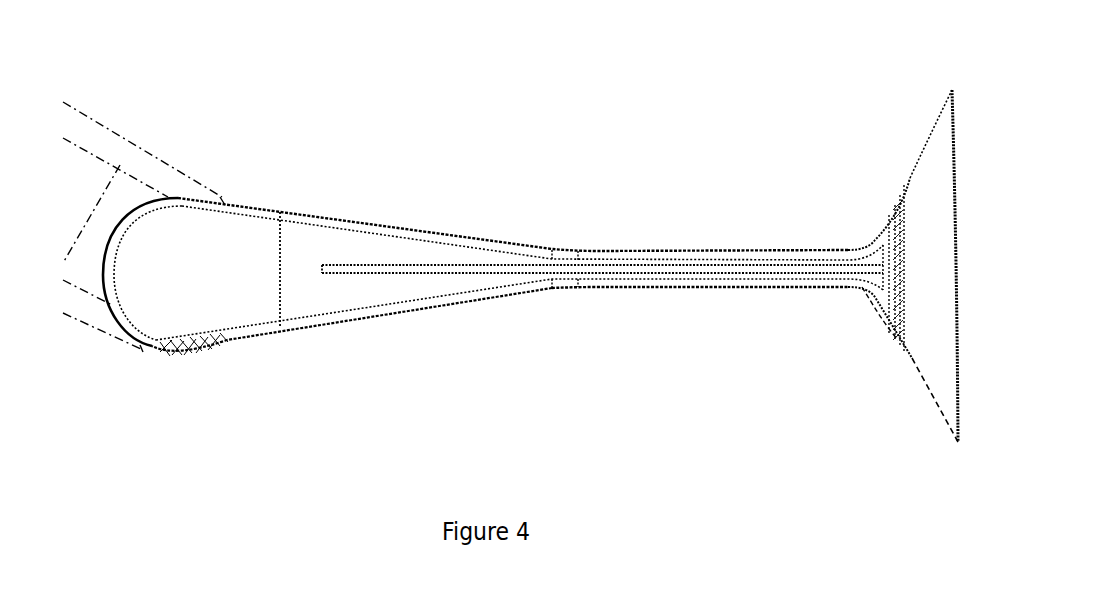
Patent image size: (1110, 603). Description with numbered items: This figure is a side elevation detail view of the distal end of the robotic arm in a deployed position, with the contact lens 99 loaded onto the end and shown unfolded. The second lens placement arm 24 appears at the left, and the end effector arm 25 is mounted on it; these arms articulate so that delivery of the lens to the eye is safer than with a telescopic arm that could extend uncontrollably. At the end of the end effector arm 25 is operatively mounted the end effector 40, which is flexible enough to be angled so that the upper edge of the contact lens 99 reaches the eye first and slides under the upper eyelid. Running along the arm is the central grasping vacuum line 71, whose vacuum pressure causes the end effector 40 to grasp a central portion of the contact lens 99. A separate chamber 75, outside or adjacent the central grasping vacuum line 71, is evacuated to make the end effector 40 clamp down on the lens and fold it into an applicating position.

The second lens placement arm 24 is at (123, 165).
The end effector arm 25 is at (392, 242).
The central grasping vacuum line 71 is at (485, 272).
The separate chamber 75 is at (455, 287).
The end effector 40 is at (873, 238).
The contact lens 99 is at (930, 383).